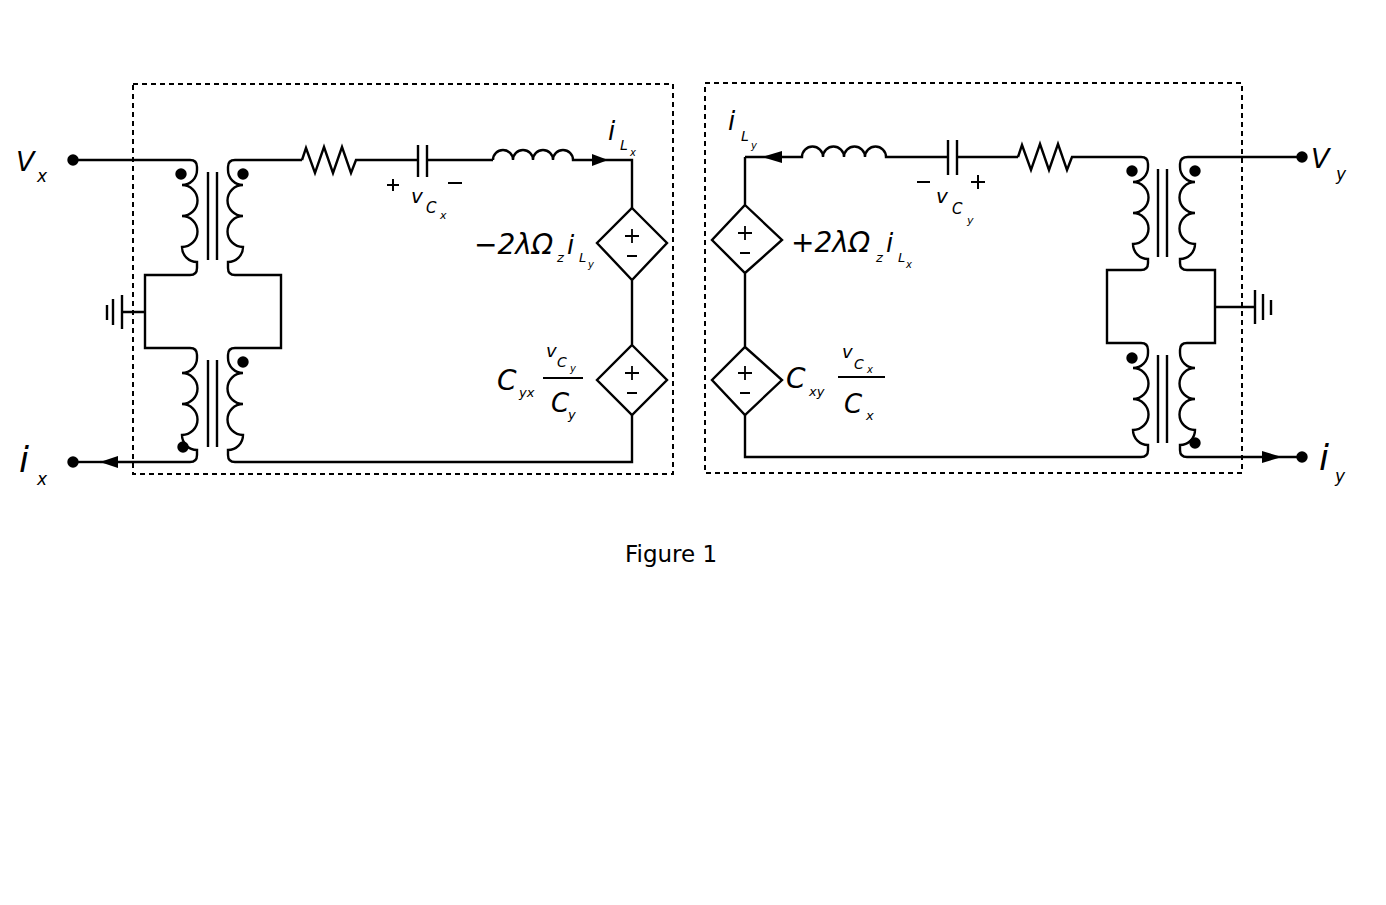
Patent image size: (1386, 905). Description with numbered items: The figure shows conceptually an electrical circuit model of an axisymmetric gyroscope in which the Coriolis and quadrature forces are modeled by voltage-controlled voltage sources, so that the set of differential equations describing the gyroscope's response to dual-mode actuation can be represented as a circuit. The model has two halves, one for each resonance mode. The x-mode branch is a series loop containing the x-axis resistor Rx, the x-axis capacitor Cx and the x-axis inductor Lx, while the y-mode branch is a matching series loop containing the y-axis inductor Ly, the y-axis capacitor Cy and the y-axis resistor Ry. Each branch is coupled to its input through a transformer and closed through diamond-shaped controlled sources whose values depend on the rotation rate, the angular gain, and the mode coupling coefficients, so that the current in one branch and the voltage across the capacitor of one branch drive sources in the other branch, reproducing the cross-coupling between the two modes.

The x-axis resistor Rx is at (360, 141).
The x-axis capacitor Cx is at (446, 143).
The x-axis inductor Lx is at (562, 158).
The y-axis resistor Ry is at (1046, 139).
The y-axis capacitor Cy is at (970, 138).
The y-axis inductor Ly is at (846, 132).